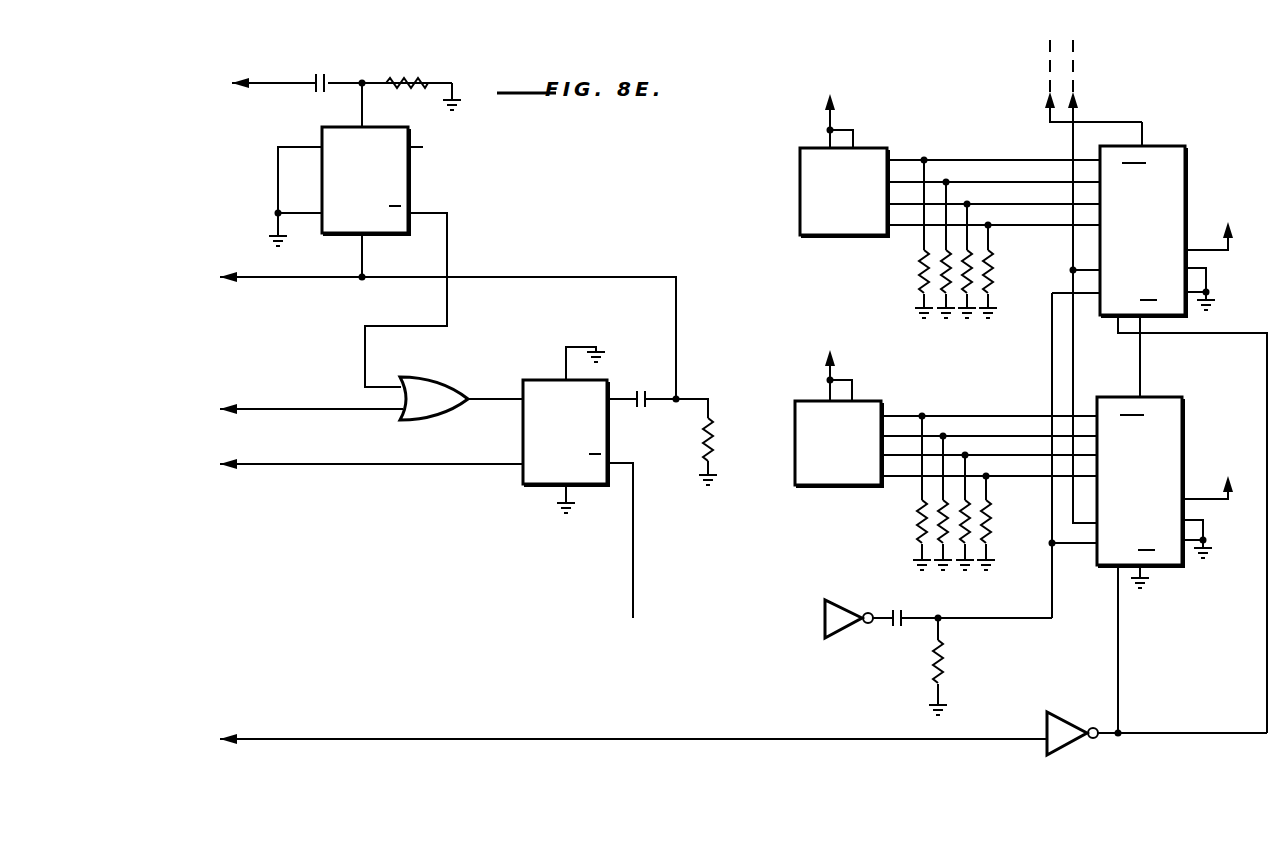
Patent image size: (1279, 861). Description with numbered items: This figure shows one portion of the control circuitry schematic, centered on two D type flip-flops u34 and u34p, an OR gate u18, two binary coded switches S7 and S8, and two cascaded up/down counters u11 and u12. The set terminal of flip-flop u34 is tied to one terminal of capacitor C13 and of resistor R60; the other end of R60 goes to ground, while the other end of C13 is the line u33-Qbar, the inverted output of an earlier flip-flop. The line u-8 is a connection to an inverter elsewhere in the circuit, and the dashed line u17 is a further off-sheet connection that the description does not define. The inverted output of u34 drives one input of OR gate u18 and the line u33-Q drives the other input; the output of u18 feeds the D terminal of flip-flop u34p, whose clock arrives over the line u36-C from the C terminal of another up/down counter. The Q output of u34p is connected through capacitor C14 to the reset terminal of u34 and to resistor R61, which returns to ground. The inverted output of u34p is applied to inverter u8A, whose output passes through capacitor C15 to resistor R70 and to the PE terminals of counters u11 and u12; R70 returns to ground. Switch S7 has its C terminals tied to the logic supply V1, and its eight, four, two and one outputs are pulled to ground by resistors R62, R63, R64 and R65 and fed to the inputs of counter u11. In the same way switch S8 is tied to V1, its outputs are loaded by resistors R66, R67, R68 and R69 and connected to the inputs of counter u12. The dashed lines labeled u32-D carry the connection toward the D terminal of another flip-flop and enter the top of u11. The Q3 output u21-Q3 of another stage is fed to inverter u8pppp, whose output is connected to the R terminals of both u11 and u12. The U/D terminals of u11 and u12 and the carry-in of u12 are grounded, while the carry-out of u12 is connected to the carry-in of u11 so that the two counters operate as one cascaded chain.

The D type flip-flop u34 is at (358, 234).
The D type flip-flop u34p is at (580, 482).
The capacitor C13 is at (324, 67).
The resistor R60 is at (408, 65).
The inverter u-8 is at (214, 277).
The OR gate u18 is at (452, 367).
The Q output of flip-flop u33-Q is at (208, 409).
The inverted Q output of flip-flop u33-Qbar is at (208, 87).
The clock terminal of up/down counter u36-C is at (208, 464).
The capacitor C14 is at (668, 418).
The resistor R61 is at (730, 451).
The binary coded switch S7 is at (950, 165).
The resistor R62 is at (920, 266).
The resistor R63 is at (945, 272).
The resistor R64 is at (968, 276).
The resistor R65 is at (990, 278).
The D terminal of flip-flop u32-D is at (1051, 281).
The signal line u17 is at (1118, 116).
The up/down counter u11 is at (1158, 439).
The binary coded switch S8 is at (946, 417).
The resistor R66 is at (918, 520).
The resistor R67 is at (942, 524).
The resistor R68 is at (966, 528).
The resistor R69 is at (988, 532).
The up/down counter u12 is at (1151, 565).
The inverter u8A is at (852, 592).
The capacitor C15 is at (895, 628).
The resistor R70 is at (946, 672).
The inverter u8pppp is at (1075, 758).
The Q3 output u21-Q3 is at (212, 739).
The logic supply voltage V1 is at (861, 105).